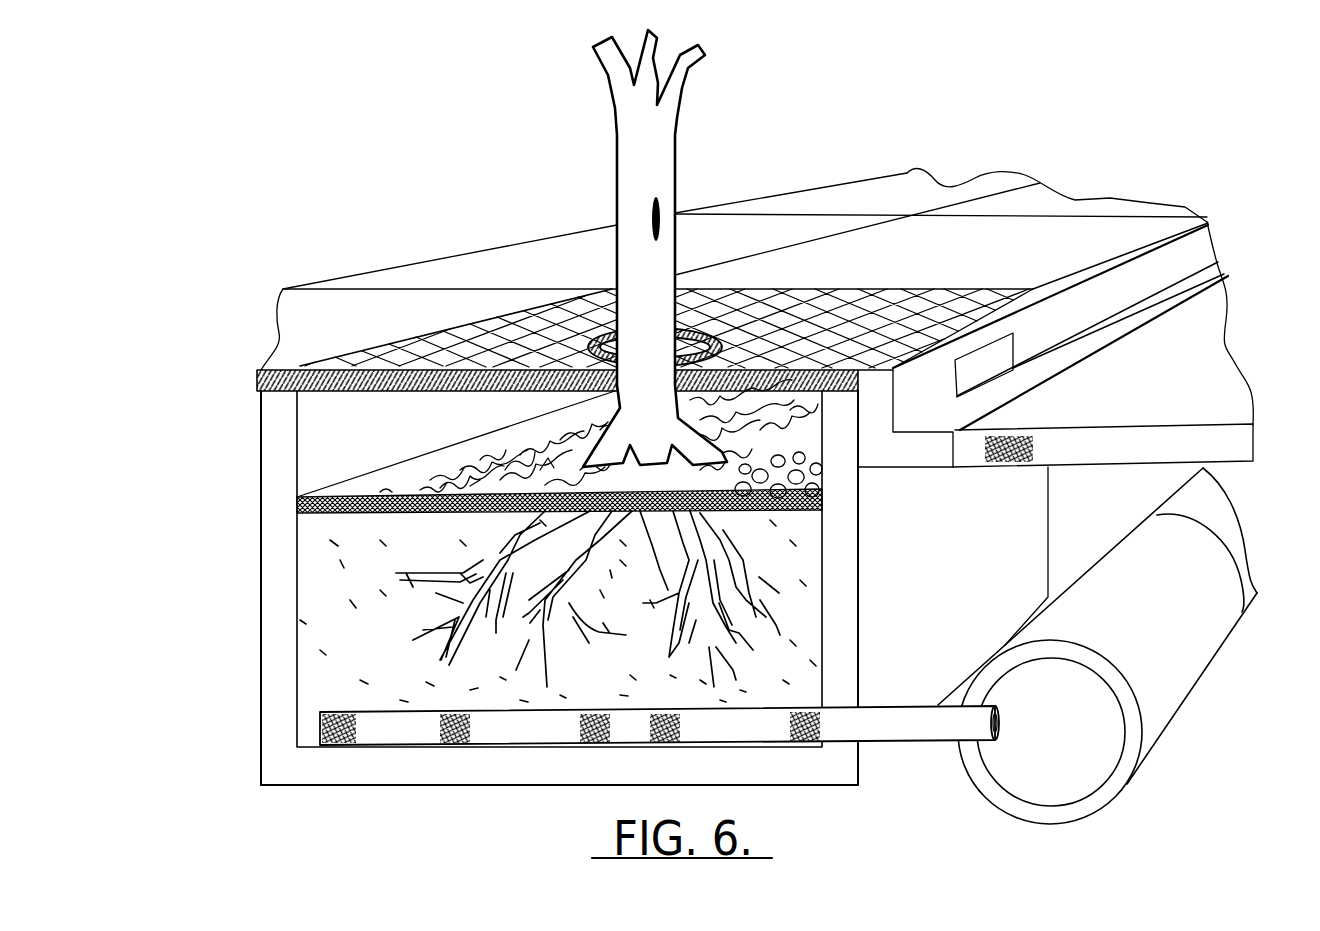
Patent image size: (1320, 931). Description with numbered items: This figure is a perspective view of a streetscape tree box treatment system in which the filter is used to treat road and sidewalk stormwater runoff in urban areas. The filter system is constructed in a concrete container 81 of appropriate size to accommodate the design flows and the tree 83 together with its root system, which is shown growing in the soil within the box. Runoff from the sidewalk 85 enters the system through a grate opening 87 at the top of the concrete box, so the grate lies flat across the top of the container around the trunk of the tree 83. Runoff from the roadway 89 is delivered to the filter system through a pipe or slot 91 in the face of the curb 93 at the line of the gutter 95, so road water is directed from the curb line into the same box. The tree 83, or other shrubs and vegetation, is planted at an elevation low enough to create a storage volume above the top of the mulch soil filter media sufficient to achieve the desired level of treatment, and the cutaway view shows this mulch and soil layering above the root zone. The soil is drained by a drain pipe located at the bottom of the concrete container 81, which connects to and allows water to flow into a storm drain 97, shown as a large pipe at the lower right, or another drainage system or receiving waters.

The concrete container 81 is at (272, 462).
The tree 83 is at (632, 222).
The sidewalk 85 is at (488, 262).
The grate opening 87 is at (437, 350).
The roadway 89 is at (1180, 370).
The pipe or slot 91 is at (985, 365).
The curb 93 is at (1057, 320).
The gutter 95 is at (1080, 345).
The storm drain 97 is at (1073, 727).